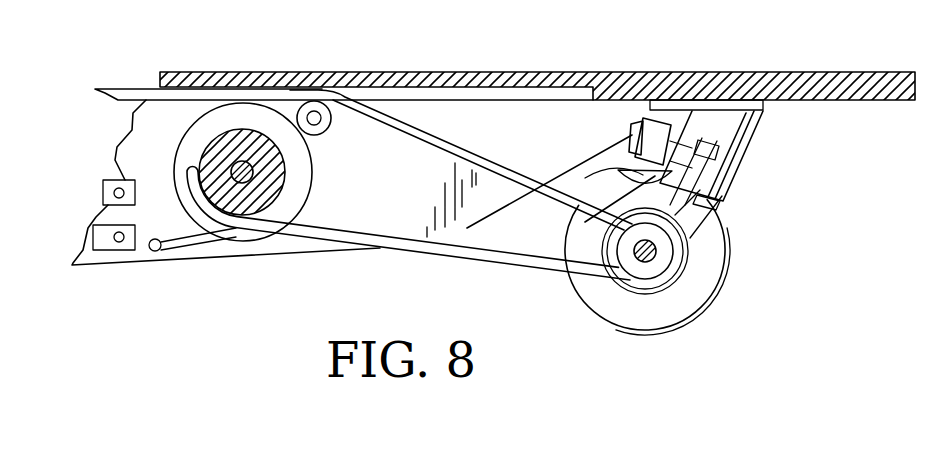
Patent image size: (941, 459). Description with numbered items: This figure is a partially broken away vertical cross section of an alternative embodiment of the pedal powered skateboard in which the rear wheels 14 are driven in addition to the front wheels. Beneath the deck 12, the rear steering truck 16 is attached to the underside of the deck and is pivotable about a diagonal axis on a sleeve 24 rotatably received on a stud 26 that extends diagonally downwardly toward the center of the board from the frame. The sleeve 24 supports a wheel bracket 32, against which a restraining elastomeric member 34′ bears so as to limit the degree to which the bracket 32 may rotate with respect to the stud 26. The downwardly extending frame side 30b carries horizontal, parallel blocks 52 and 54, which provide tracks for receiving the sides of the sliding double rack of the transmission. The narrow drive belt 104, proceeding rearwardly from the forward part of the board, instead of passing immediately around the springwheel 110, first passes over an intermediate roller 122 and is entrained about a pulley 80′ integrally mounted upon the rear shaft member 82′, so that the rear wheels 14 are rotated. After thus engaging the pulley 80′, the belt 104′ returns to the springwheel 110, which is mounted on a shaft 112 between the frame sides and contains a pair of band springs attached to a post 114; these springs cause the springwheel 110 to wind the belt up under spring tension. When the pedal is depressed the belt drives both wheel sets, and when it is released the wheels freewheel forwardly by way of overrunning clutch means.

The deck 12 is at (492, 72).
The rear wheels 14 is at (716, 300).
The rear steering truck 16 is at (758, 203).
The sleeve 24 is at (733, 160).
The stud 26 is at (729, 246).
The frame side 30b is at (262, 262).
The wheel bracket 32 is at (597, 162).
The restraining elastomeric member 34′ is at (695, 135).
The block 52 is at (115, 182).
The block 54 is at (100, 243).
The rear drive pulley 80′ is at (660, 270).
The rear shaft member 82′ is at (633, 275).
The narrow belt 104 is at (134, 88).
The drive belt 104′ is at (440, 131).
The springwheel 110 is at (300, 200).
The shaft 112 is at (245, 160).
The post 114 is at (152, 252).
The intermediate roller 122 is at (331, 121).